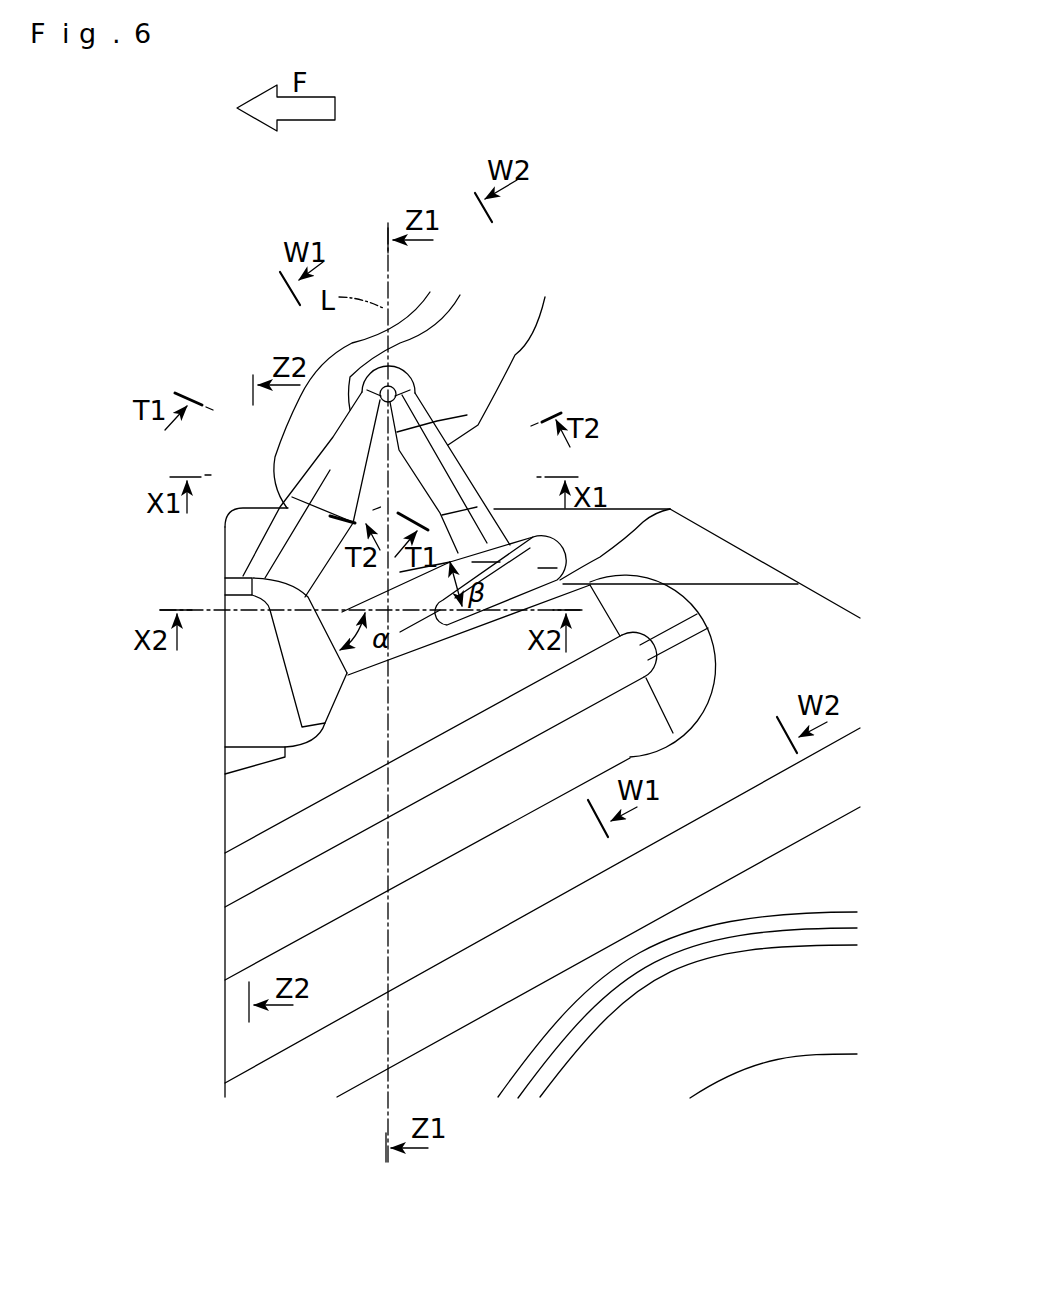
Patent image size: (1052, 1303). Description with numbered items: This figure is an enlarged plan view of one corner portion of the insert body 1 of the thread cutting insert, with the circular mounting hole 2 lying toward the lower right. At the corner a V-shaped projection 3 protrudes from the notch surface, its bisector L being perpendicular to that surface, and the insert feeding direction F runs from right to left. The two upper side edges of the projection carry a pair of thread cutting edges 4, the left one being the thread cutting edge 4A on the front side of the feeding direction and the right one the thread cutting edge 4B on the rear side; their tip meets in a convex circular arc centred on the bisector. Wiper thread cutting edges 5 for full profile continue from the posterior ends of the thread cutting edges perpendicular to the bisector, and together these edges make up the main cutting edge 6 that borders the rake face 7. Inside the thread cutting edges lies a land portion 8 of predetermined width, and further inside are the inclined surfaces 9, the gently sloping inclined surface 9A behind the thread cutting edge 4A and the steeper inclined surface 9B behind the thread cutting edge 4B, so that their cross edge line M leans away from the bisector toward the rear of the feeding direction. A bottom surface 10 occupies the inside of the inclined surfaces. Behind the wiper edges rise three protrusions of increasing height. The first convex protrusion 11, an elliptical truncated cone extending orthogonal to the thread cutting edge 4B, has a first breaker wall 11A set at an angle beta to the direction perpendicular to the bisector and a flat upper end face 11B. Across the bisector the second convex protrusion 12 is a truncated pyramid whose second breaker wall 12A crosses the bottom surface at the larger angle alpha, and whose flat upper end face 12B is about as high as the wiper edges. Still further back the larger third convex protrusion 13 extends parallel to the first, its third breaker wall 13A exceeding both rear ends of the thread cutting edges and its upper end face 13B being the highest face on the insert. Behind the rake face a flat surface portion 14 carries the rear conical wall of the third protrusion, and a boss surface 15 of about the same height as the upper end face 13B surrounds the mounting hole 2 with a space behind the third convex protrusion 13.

The insert body 1 is at (786, 530).
The mounting hole 2 is at (750, 1068).
The V-shaped projection 3 is at (421, 380).
The thread cutting edge 4 is at (481, 356).
The thread cutting edge 4A is at (439, 339).
The thread cutting edge 4B is at (531, 356).
The wiper thread cutting edge for full profile 5 is at (638, 300).
The main cutting edge 6 is at (665, 276).
The rake face 7 is at (502, 516).
The land portion 8 is at (333, 437).
The inclined surface 9 is at (360, 456).
The inclined surface 9A is at (275, 522).
The inclined surface 9B is at (490, 503).
The bottom surface 10 is at (425, 470).
The first convex protrusion 11 is at (742, 445).
The first breaker wall 11A is at (560, 557).
The upper end face 11B is at (672, 508).
The second convex protrusion 12 is at (100, 698).
The second breaker wall 12A is at (297, 648).
The upper end face 12B is at (253, 722).
The third convex protrusion 13 is at (100, 826).
The third breaker wall 13A is at (267, 800).
The upper end face 13B is at (250, 873).
The flat surface portion 14 is at (807, 643).
The boss surface 15 is at (557, 1003).